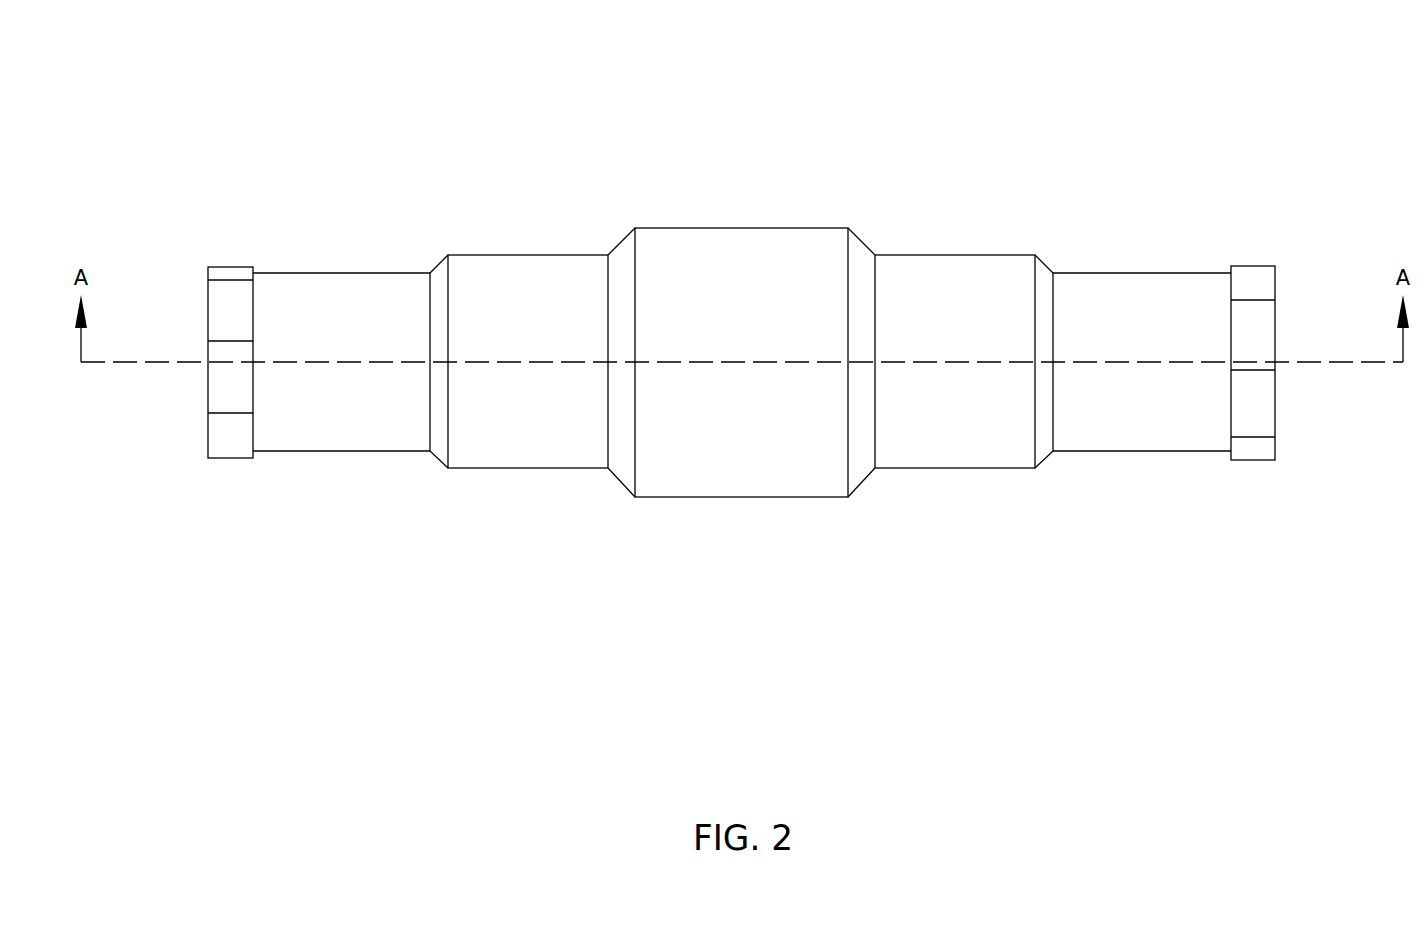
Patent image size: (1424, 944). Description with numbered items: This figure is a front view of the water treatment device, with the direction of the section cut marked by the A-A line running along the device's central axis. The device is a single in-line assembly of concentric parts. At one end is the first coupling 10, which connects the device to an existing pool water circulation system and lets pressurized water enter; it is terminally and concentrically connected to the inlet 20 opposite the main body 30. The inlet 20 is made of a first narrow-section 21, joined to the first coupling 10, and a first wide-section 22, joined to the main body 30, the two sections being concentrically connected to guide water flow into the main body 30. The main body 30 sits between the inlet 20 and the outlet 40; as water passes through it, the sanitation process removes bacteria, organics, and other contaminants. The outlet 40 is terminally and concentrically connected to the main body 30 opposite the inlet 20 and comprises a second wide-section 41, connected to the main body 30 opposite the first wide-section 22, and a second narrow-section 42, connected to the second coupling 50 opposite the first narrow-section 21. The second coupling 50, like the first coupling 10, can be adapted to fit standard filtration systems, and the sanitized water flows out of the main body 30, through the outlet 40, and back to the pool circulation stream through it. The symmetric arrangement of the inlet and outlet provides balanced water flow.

The first coupling 10 is at (1267, 411).
The inlet 20 is at (1053, 298).
The first narrow-section 21 is at (1150, 282).
The first wide-section 22 is at (960, 262).
The main body 30 is at (758, 202).
The outlet 40 is at (427, 401).
The second wide-section 41 is at (518, 462).
The second narrow-section 42 is at (308, 443).
The second coupling 50 is at (218, 395).